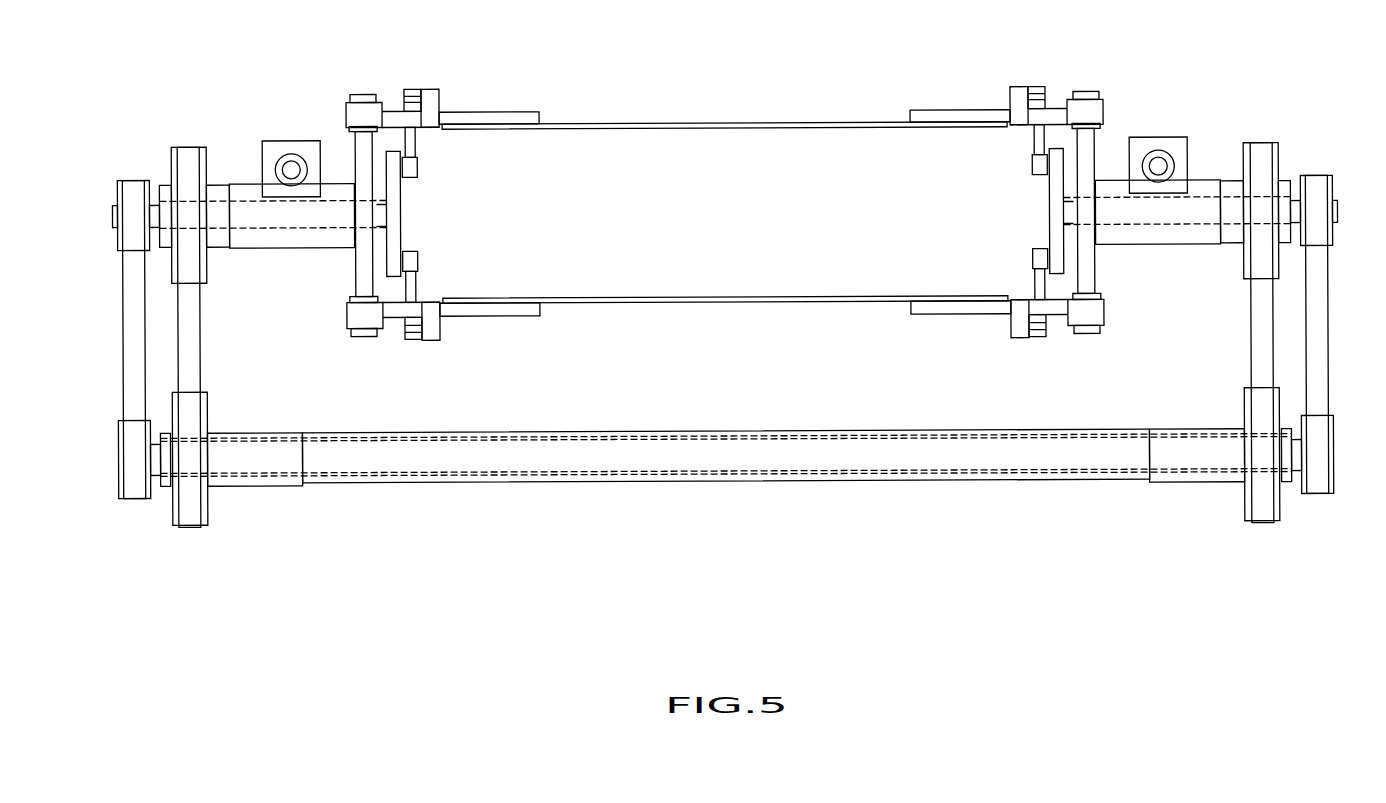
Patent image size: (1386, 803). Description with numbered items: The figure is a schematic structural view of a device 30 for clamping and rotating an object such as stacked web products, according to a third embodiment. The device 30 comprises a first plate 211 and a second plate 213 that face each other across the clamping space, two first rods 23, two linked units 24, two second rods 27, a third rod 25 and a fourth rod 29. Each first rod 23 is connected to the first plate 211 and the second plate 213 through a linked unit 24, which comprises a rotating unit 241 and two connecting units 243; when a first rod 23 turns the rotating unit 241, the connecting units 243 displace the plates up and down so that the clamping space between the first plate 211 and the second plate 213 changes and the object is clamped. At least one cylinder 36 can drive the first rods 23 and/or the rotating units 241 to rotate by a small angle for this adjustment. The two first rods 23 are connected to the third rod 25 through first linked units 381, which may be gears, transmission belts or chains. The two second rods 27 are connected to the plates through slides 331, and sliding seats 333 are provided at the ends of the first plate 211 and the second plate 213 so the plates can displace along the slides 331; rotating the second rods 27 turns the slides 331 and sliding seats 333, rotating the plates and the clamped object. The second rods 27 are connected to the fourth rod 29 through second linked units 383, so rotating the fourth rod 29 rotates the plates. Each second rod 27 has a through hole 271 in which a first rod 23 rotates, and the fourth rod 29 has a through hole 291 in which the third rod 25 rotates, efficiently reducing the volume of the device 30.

The device 30 is at (542, 43).
The first plate 211 is at (760, 126).
The second plate 213 is at (757, 302).
The first rod 23 is at (252, 226).
The linked unit 24 is at (725, 214).
The rotating unit 241 is at (398, 213).
The connecting unit 243 is at (418, 153).
The third rod 25 is at (562, 462).
The second rod 27 is at (248, 183).
The through hole 271 is at (302, 228).
The fourth rod 29 is at (725, 481).
The through hole 291 is at (637, 474).
The slide 331 is at (357, 141).
The sliding seat 333 is at (381, 101).
The cylinder 36 is at (285, 138).
The first linked unit 381 is at (132, 302).
The second linked unit 383 is at (198, 336).